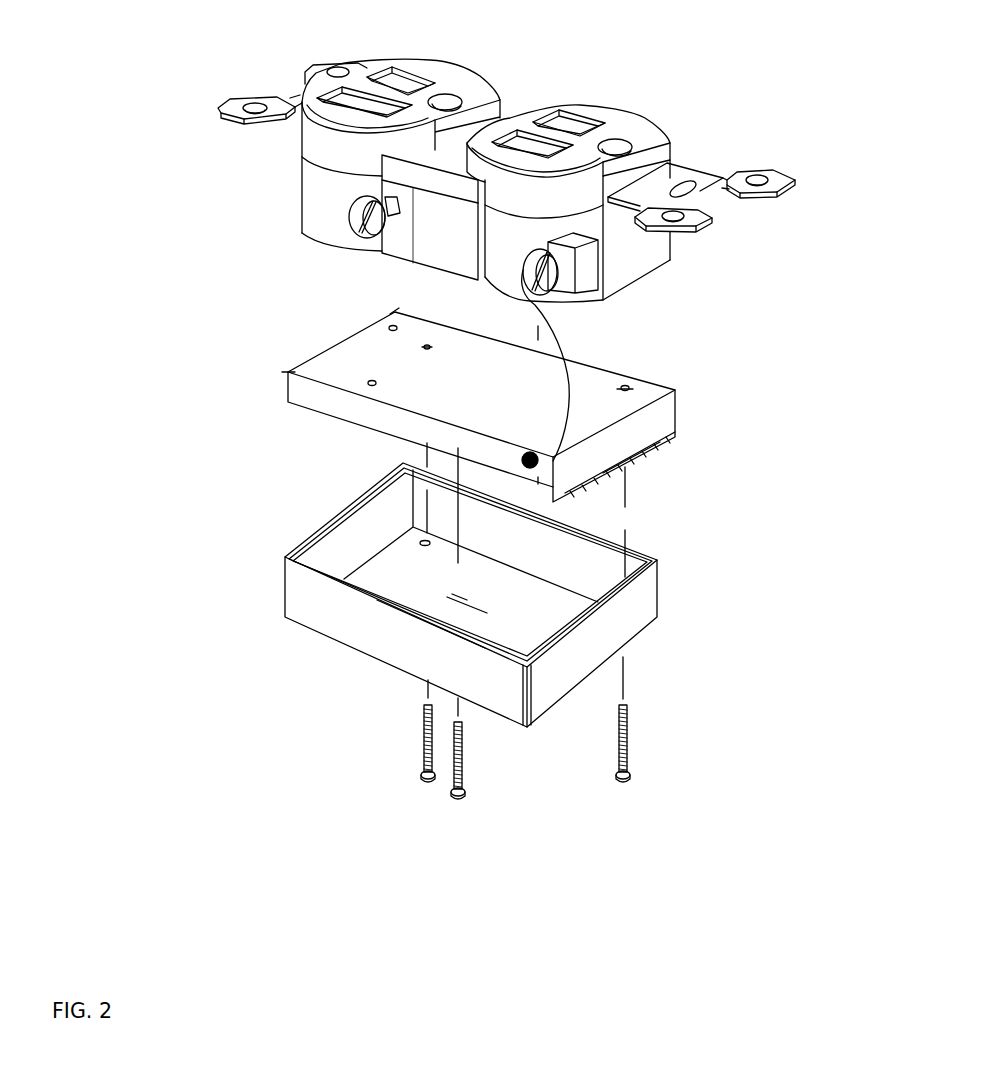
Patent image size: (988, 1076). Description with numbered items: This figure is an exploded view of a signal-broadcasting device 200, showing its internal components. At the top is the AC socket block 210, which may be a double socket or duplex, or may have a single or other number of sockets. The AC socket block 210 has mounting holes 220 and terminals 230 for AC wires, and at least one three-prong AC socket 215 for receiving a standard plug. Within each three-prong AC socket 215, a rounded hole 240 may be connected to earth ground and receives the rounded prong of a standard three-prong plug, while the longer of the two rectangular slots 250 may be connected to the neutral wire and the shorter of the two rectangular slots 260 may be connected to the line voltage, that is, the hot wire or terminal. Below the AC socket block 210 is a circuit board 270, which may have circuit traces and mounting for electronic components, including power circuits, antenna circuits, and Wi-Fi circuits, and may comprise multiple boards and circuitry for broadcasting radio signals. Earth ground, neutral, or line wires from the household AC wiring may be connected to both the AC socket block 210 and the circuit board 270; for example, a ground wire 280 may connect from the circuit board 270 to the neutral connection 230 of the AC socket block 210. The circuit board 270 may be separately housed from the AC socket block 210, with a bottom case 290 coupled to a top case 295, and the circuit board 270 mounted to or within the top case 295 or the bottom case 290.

The receptacle assembly 200 is at (435, 405).
The AC socket block 210 is at (302, 208).
The three-prong AC socket 215 is at (439, 68).
The mounting holes 220 is at (688, 187).
The terminals 230 is at (398, 217).
The rounded hole 240 is at (447, 95).
The longer rectangular slot 250 is at (300, 93).
The shorter rectangular slot 260 is at (402, 72).
The circuit board 270 is at (675, 390).
The ground wire 280 is at (552, 369).
The bottom case 290 is at (603, 633).
The top case 295 is at (670, 451).